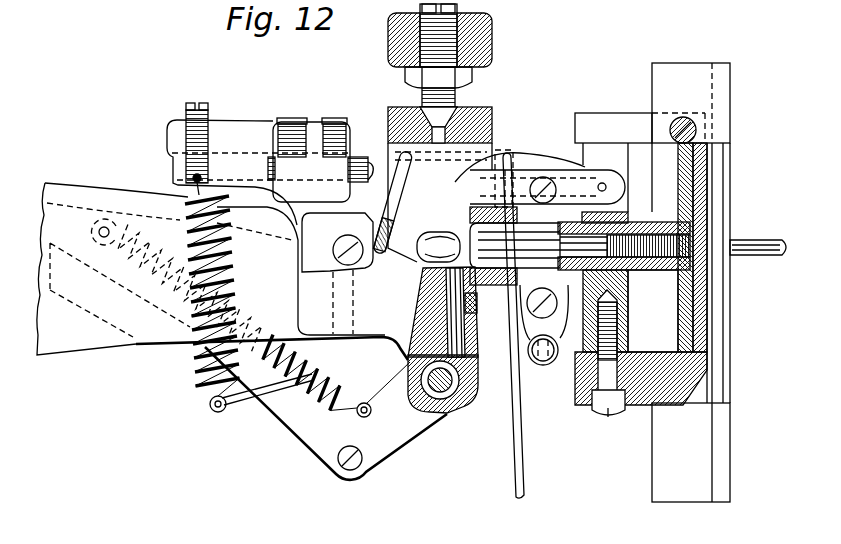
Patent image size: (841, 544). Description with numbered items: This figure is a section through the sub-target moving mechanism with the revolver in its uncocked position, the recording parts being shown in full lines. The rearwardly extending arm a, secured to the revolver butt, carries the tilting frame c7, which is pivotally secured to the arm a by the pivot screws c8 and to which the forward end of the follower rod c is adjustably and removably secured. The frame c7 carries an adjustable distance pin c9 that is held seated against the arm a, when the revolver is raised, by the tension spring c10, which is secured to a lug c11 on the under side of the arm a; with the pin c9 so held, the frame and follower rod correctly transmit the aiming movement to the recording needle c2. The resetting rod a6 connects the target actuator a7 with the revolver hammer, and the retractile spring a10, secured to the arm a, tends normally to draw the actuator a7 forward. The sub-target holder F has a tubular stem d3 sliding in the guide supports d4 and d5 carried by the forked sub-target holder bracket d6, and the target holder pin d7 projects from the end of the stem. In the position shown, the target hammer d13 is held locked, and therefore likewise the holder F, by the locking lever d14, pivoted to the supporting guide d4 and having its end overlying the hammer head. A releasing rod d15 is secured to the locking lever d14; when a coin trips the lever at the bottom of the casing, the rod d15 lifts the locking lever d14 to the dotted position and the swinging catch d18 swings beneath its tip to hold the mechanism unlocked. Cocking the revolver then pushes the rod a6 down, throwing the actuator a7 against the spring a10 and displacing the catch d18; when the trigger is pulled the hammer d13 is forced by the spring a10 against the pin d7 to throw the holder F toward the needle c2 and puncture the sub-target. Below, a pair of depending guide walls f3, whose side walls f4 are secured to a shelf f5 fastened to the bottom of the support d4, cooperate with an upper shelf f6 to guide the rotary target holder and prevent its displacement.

The arm a is at (80, 343).
The resetting rod a6 is at (290, 430).
The target actuator a7 is at (398, 436).
The retractile spring a10 is at (330, 372).
The follower rod c is at (364, 152).
The recording needle c2 is at (757, 242).
The tilting frame c7 is at (233, 125).
The pivot screws c8 is at (345, 265).
The adjustable distance pin c9 is at (188, 103).
The tension spring c10 is at (228, 273).
The lug c11 is at (177, 178).
The tubular stem d3 is at (658, 275).
The guide support d4 is at (625, 305).
The guide support d5 is at (520, 282).
The sub-target holder bracket d6 is at (545, 160).
The target holder pin d7 is at (497, 147).
The target hammer d13 is at (418, 268).
The locking lever d14 is at (455, 183).
The releasing rod d15 is at (524, 452).
The swinging catch d18 is at (395, 150).
The sub-target holder F is at (678, 177).
The depending guide walls f3 is at (724, 452).
The side walls f4 is at (691, 452).
The shelf f5 is at (630, 408).
The upper shelf f6 is at (604, 118).